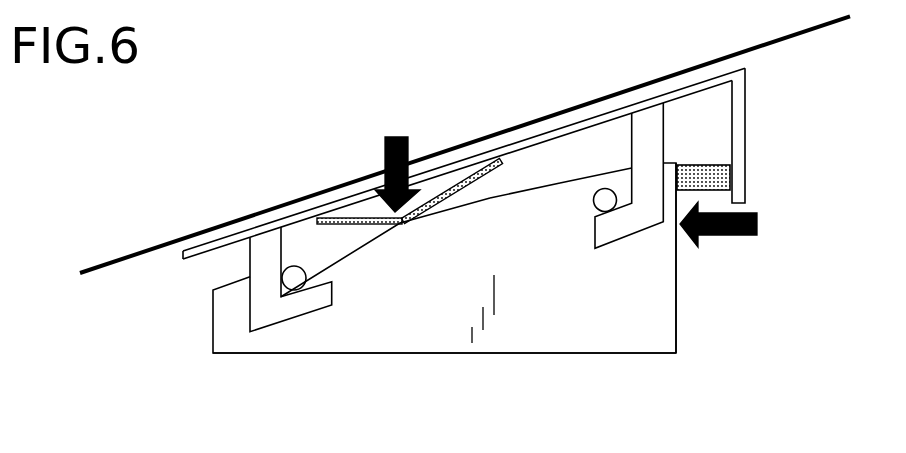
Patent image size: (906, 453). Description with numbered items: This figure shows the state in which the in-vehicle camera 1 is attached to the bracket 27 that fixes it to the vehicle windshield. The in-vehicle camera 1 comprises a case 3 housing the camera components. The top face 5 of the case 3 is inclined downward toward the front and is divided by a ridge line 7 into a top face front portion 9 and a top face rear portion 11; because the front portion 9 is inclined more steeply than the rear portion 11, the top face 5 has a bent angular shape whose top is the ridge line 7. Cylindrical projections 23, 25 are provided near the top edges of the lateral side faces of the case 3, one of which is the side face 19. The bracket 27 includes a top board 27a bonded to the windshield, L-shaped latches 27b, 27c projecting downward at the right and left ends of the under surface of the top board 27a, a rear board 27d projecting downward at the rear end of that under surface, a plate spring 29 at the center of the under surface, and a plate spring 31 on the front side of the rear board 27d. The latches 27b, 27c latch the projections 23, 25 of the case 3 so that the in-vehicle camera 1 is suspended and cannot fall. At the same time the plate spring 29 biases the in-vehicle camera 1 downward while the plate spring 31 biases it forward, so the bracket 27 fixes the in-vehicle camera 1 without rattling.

The in-vehicle camera 1 is at (650, 322).
The case 3 is at (676, 278).
The top face 5 is at (573, 177).
The ridge line 7 is at (508, 190).
The top face front portion 9 is at (395, 226).
The top face rear portion 11 is at (550, 187).
The side face 19 is at (602, 332).
The cylindrical projection 23 is at (295, 277).
The cylindrical projection 25 is at (605, 201).
The bracket 27 is at (342, 180).
The top board 27a is at (210, 250).
The latch 27b is at (302, 301).
The latch 27c is at (612, 227).
The rear board 27d is at (742, 130).
The plate spring 29 is at (500, 168).
The plate spring 31 is at (697, 165).